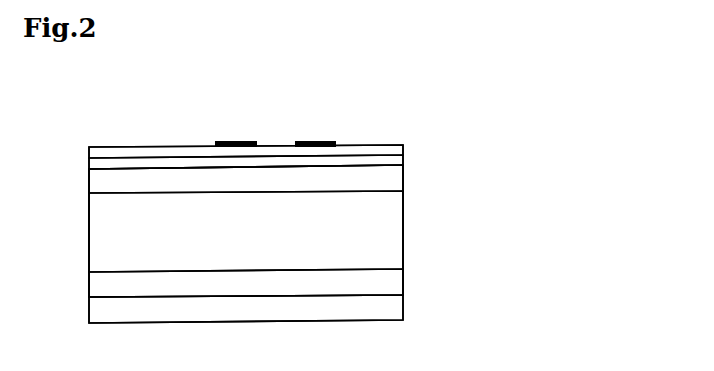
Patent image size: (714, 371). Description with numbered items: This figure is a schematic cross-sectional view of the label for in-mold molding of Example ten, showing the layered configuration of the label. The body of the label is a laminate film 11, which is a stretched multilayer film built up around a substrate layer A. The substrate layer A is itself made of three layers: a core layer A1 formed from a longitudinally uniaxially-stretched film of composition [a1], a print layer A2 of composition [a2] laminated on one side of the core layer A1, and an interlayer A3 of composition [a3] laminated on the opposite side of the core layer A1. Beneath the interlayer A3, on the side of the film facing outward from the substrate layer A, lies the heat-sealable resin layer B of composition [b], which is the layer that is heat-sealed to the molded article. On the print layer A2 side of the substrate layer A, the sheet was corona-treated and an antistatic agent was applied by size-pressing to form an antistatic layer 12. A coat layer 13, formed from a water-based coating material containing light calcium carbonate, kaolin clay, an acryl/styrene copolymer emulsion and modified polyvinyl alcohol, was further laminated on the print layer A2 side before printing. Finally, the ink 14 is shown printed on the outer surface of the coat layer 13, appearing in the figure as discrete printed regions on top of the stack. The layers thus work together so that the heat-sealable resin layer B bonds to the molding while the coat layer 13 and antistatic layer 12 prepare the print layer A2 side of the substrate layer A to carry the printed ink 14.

The laminate film 11 is at (605, 342).
The antistatic layer 12 is at (391, 162).
The coat layer 13 is at (375, 150).
The ink 14 is at (236, 141).
The substrate layer A is at (525, 163).
The core layer A1 is at (388, 228).
The print layer A2 is at (390, 182).
The interlayer A3 is at (390, 282).
The heat-sealable resin layer B is at (392, 310).